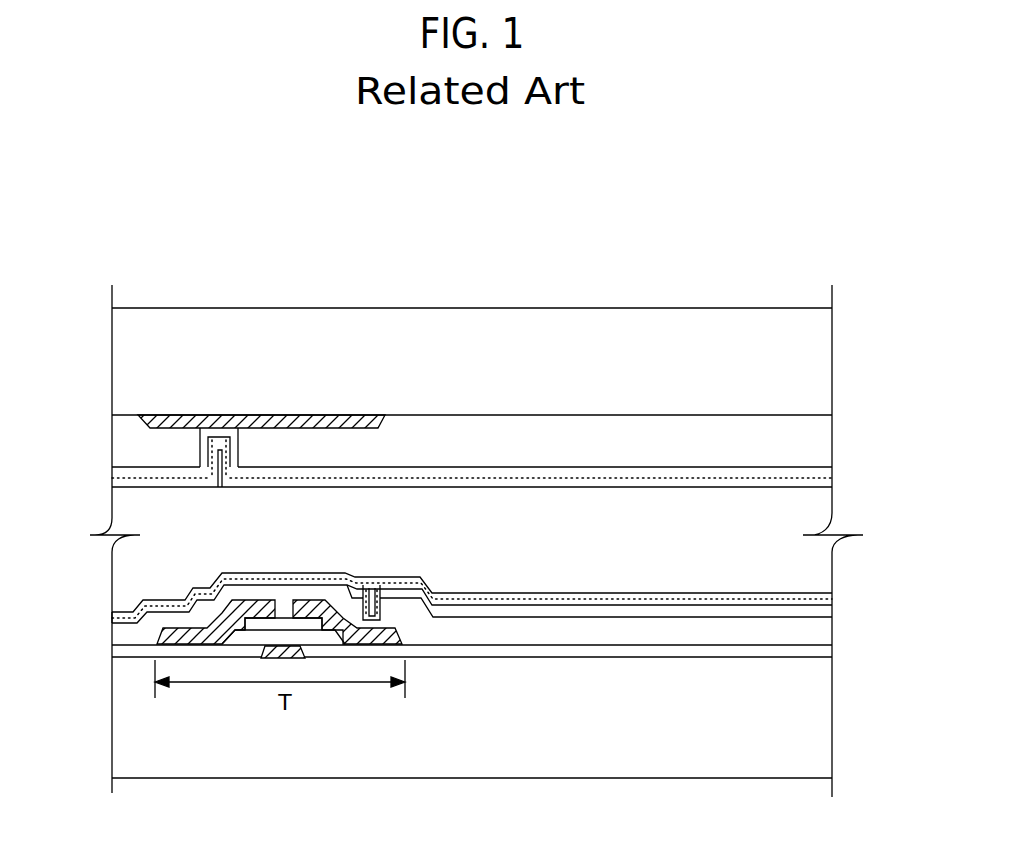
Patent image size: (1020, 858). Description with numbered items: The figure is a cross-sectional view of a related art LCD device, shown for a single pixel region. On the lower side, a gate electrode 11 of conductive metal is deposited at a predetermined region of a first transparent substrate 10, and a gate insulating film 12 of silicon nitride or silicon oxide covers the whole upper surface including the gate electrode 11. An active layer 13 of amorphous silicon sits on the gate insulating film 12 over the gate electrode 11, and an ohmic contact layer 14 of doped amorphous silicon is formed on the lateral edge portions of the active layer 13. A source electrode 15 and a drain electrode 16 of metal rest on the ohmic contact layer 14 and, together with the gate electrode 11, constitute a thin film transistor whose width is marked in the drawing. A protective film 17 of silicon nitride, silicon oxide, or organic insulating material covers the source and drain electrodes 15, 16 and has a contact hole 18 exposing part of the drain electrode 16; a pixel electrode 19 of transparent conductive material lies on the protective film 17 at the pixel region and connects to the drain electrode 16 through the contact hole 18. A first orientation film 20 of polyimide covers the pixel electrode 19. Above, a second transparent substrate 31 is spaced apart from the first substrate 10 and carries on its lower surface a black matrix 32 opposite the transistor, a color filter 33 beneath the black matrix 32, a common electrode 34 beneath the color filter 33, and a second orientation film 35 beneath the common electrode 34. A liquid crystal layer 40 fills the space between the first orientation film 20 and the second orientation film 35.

The first transparent substrate 10 is at (571, 762).
The gate electrode 11 is at (262, 658).
The gate insulating film 12 is at (688, 647).
The active layer 13 is at (300, 647).
The ohmic contact layer 14 is at (217, 573).
The source electrode 15 is at (256, 600).
The drain electrode 16 is at (318, 600).
The protective film 17 is at (120, 630).
The contact hole 18 is at (372, 585).
The pixel electrode 19 is at (547, 605).
The first orientation film 20 is at (808, 599).
The second transparent substrate 31 is at (348, 338).
The black matrix 32 is at (233, 425).
The color filter 33 is at (487, 435).
The common electrode 34 is at (598, 470).
The second orientation film 35 is at (722, 480).
The liquid crystal layer 40 is at (805, 558).